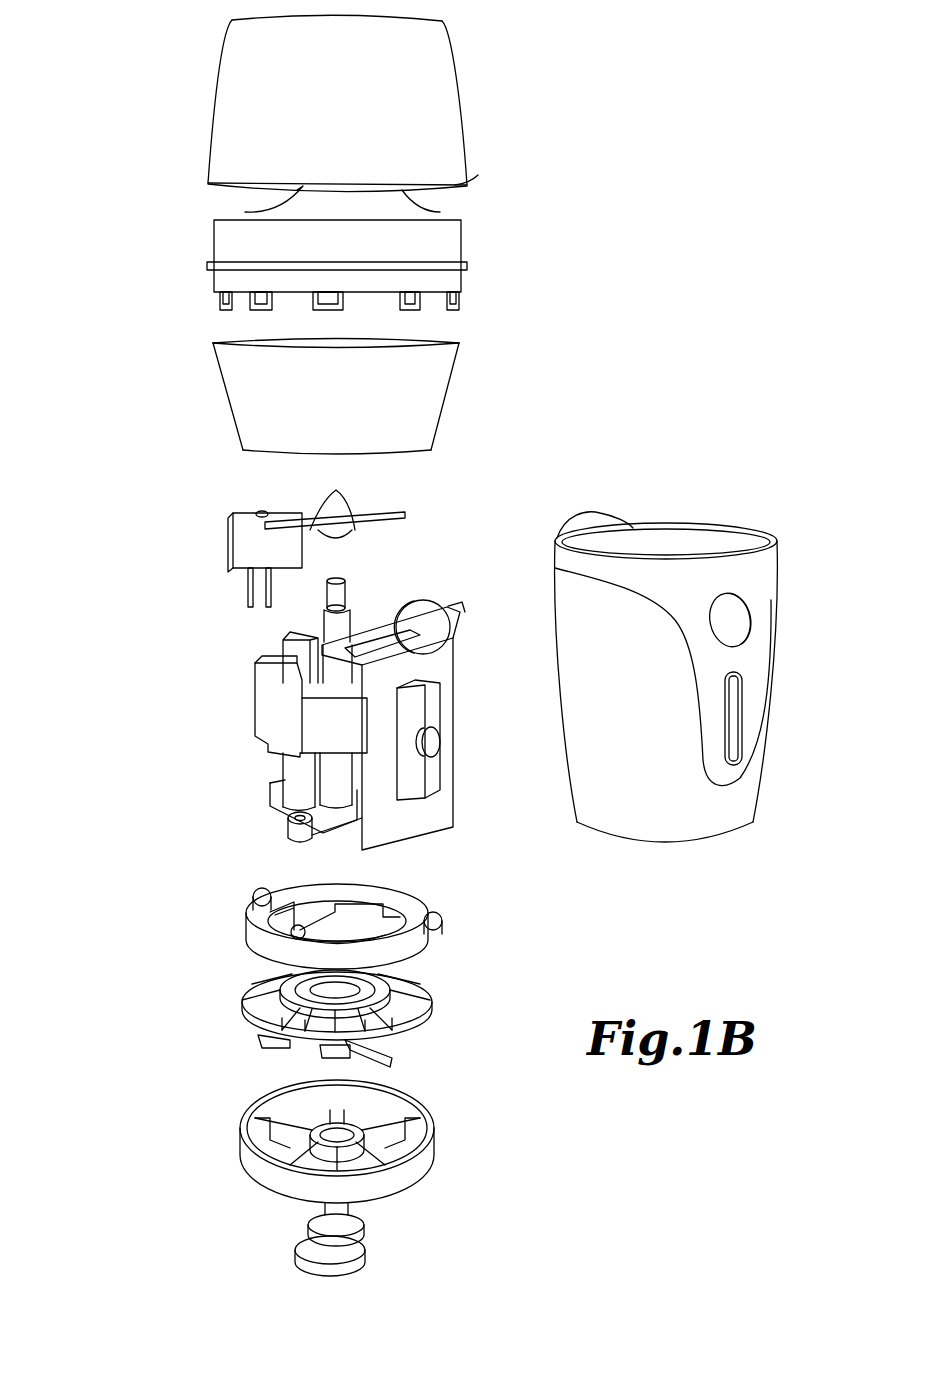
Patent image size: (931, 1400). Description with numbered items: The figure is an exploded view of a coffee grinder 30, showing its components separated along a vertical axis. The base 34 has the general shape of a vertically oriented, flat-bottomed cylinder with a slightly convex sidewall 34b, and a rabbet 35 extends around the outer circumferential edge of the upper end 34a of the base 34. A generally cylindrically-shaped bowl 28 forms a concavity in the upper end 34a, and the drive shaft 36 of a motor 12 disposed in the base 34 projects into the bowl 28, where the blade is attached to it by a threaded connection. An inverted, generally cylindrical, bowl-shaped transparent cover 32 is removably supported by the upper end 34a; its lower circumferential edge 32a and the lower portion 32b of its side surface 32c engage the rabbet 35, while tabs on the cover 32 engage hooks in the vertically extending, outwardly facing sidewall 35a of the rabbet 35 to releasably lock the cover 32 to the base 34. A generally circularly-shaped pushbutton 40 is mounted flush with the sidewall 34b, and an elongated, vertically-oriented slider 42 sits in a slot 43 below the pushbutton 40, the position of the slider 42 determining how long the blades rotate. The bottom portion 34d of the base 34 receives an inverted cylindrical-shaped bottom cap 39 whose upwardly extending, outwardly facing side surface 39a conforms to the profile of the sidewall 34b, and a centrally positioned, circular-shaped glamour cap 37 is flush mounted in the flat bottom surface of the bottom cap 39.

The motor 12 is at (255, 708).
The bowl 28 is at (435, 400).
The coffee grinder 30 is at (129, 771).
The cover 32 is at (459, 82).
The lower circumferential edge 32a is at (446, 184).
The lower portion 32b is at (440, 212).
The side surface 32c is at (245, 212).
The base 34 is at (665, 845).
The upper end 34a is at (748, 522).
The sidewall 34b is at (654, 707).
The bottom portion 34d is at (590, 522).
The rabbet 35 is at (672, 522).
The sidewall 35a is at (555, 542).
The drive shaft 36 is at (348, 590).
The glamour cap 37 is at (350, 1272).
The bottom cap 39 is at (238, 1152).
The side surface 39a is at (327, 1187).
The pushbutton 40 is at (440, 641).
The slider 42 is at (440, 744).
The slot 43 is at (736, 690).